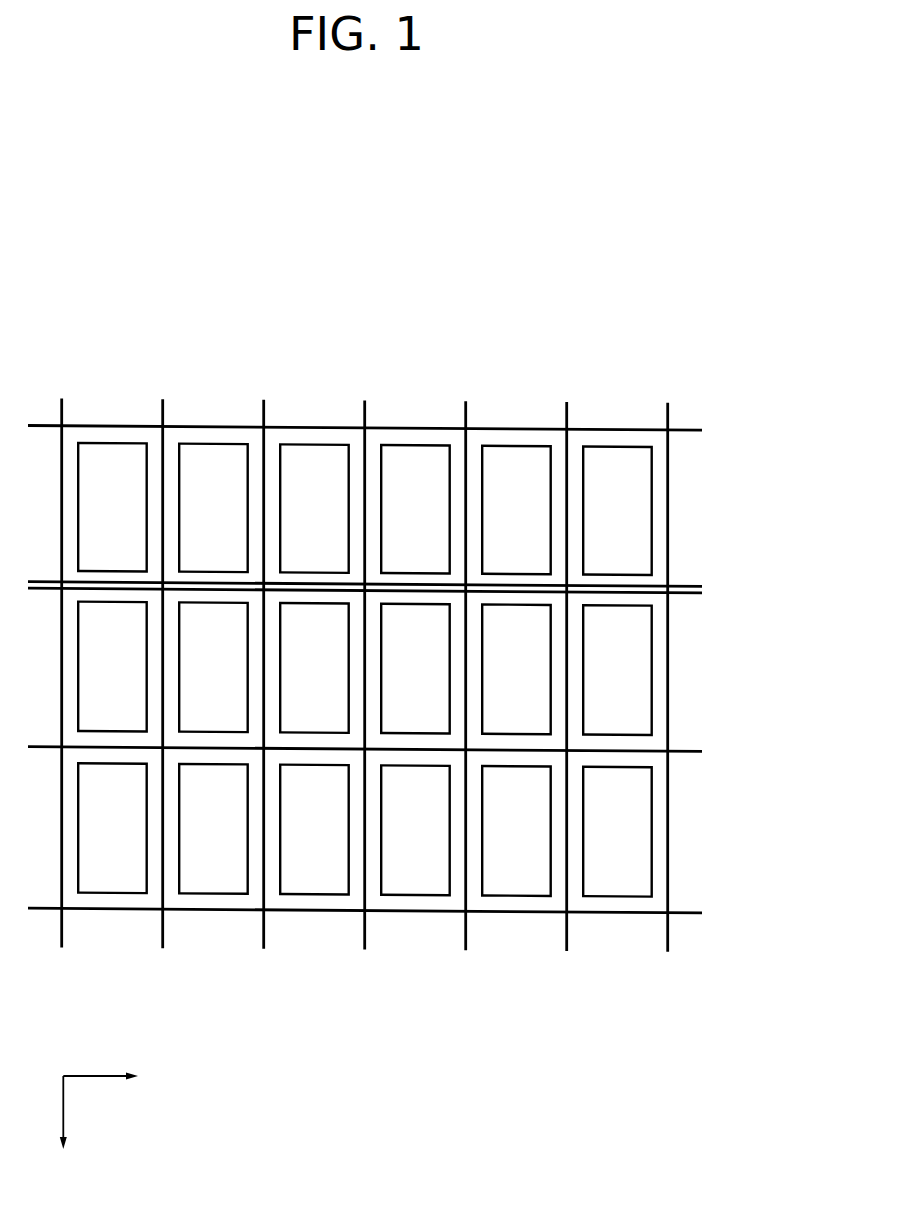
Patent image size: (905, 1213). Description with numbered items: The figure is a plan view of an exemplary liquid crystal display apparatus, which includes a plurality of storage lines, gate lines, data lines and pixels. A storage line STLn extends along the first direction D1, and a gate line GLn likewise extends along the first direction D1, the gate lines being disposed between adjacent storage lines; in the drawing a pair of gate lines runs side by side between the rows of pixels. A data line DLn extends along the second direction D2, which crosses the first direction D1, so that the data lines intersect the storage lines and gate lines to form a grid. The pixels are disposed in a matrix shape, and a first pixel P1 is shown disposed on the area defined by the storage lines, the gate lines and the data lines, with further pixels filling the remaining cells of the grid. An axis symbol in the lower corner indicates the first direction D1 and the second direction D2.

The data line DLn is at (63, 658).
The storage line STLn is at (683, 431).
The gate line GLn is at (685, 587).
The first pixel P1 is at (112, 507).
The first direction D1 is at (115, 1075).
The second direction D2 is at (62, 1128).